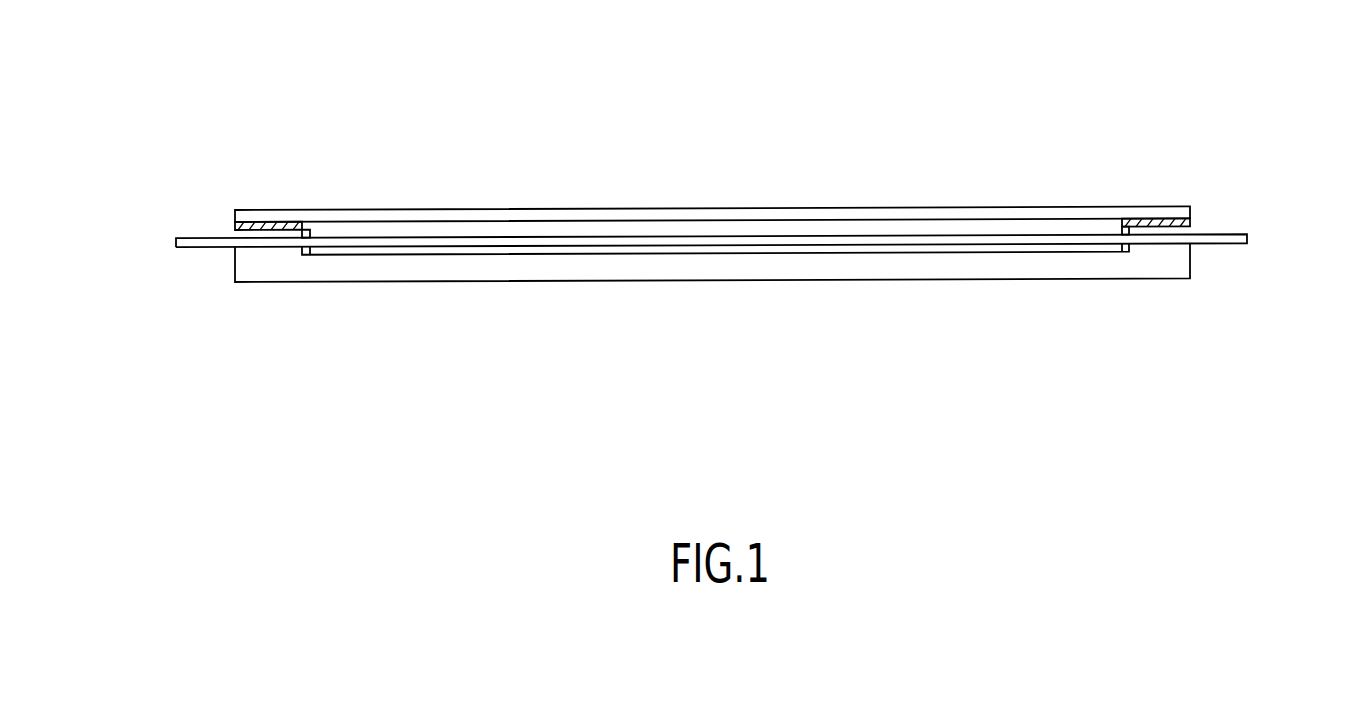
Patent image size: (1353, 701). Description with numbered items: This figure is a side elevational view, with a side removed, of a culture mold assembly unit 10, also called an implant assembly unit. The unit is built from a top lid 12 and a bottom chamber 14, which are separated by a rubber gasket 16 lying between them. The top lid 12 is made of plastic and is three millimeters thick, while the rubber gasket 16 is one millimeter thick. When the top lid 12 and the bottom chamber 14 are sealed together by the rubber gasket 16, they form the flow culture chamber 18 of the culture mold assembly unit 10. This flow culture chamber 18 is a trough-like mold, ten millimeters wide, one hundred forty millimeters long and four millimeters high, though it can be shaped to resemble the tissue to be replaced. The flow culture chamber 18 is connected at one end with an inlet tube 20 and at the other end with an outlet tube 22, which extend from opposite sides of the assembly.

The culture mold assembly unit 10 is at (953, 146).
The top lid 12 is at (636, 208).
The bottom chamber 14 is at (379, 273).
The rubber gasket 16 is at (236, 227).
The flow culture chamber 18 is at (473, 244).
The inlet tube 20 is at (176, 246).
The outlet tube 22 is at (1247, 240).